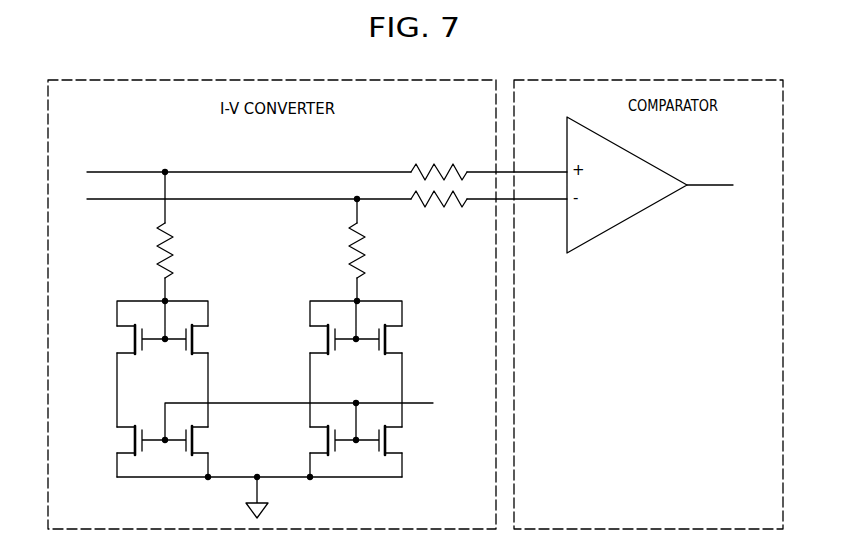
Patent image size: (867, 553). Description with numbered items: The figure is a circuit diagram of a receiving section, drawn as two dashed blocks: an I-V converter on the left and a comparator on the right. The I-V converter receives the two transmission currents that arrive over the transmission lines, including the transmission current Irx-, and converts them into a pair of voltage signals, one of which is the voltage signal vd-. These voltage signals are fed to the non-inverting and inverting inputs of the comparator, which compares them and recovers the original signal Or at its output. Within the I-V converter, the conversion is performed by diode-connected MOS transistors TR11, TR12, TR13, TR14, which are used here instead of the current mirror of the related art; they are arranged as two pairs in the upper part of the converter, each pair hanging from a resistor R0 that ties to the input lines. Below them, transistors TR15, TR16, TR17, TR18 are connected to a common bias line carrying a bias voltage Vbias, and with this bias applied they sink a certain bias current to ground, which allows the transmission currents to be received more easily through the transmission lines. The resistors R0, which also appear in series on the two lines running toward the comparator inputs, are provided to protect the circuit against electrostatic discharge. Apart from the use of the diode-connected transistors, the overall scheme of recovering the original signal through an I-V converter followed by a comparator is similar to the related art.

The diode-connected MOS transistor TR11 is at (122, 339).
The diode-connected MOS transistor TR12 is at (207, 339).
The diode-connected MOS transistor TR13 is at (313, 339).
The diode-connected MOS transistor TR14 is at (397, 339).
The transistor TR15 is at (122, 440).
The transistor TR16 is at (207, 440).
The transistor TR17 is at (313, 440).
The transistor TR18 is at (397, 440).
The resistor R0 is at (312, 209).
The bias voltage Vbias is at (326, 417).
The transmission current Irx- is at (138, 212).
The voltage signal vd- is at (517, 210).
The original signal Or is at (724, 185).